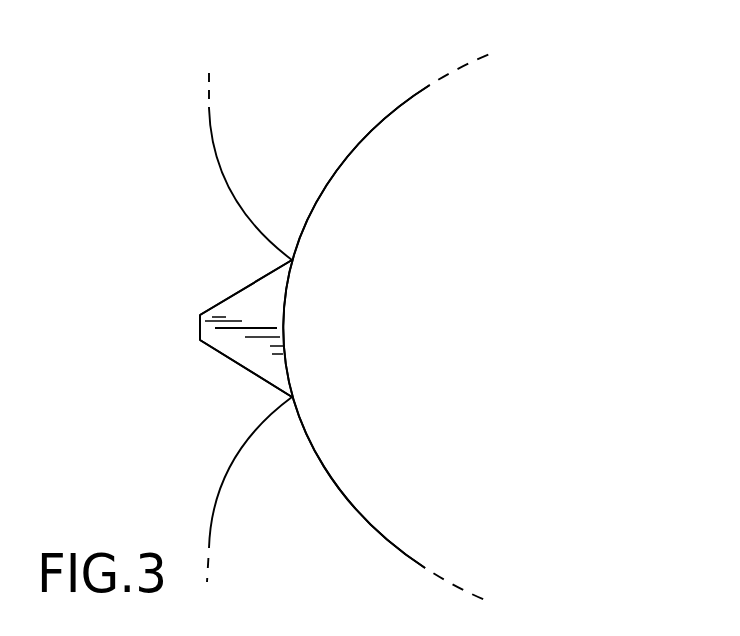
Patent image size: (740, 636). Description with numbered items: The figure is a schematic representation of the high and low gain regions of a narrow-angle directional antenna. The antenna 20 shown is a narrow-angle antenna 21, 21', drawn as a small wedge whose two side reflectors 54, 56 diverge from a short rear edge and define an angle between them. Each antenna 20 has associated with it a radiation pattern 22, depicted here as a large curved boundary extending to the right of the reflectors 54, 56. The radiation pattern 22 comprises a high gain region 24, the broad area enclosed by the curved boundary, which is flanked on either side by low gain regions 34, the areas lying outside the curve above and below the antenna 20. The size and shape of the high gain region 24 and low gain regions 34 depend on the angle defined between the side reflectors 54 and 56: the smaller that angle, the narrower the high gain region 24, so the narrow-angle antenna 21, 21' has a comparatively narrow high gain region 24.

The directional antenna 20 is at (198, 291).
The narrow-angle antenna 21 is at (146, 357).
The narrow-angle antenna 21' is at (178, 346).
The radiation pattern 22 is at (600, 78).
The high gain region 24 is at (457, 342).
The low gain region 34 is at (292, 132).
The side reflector 54 is at (250, 285).
The side reflector 56 is at (243, 370).